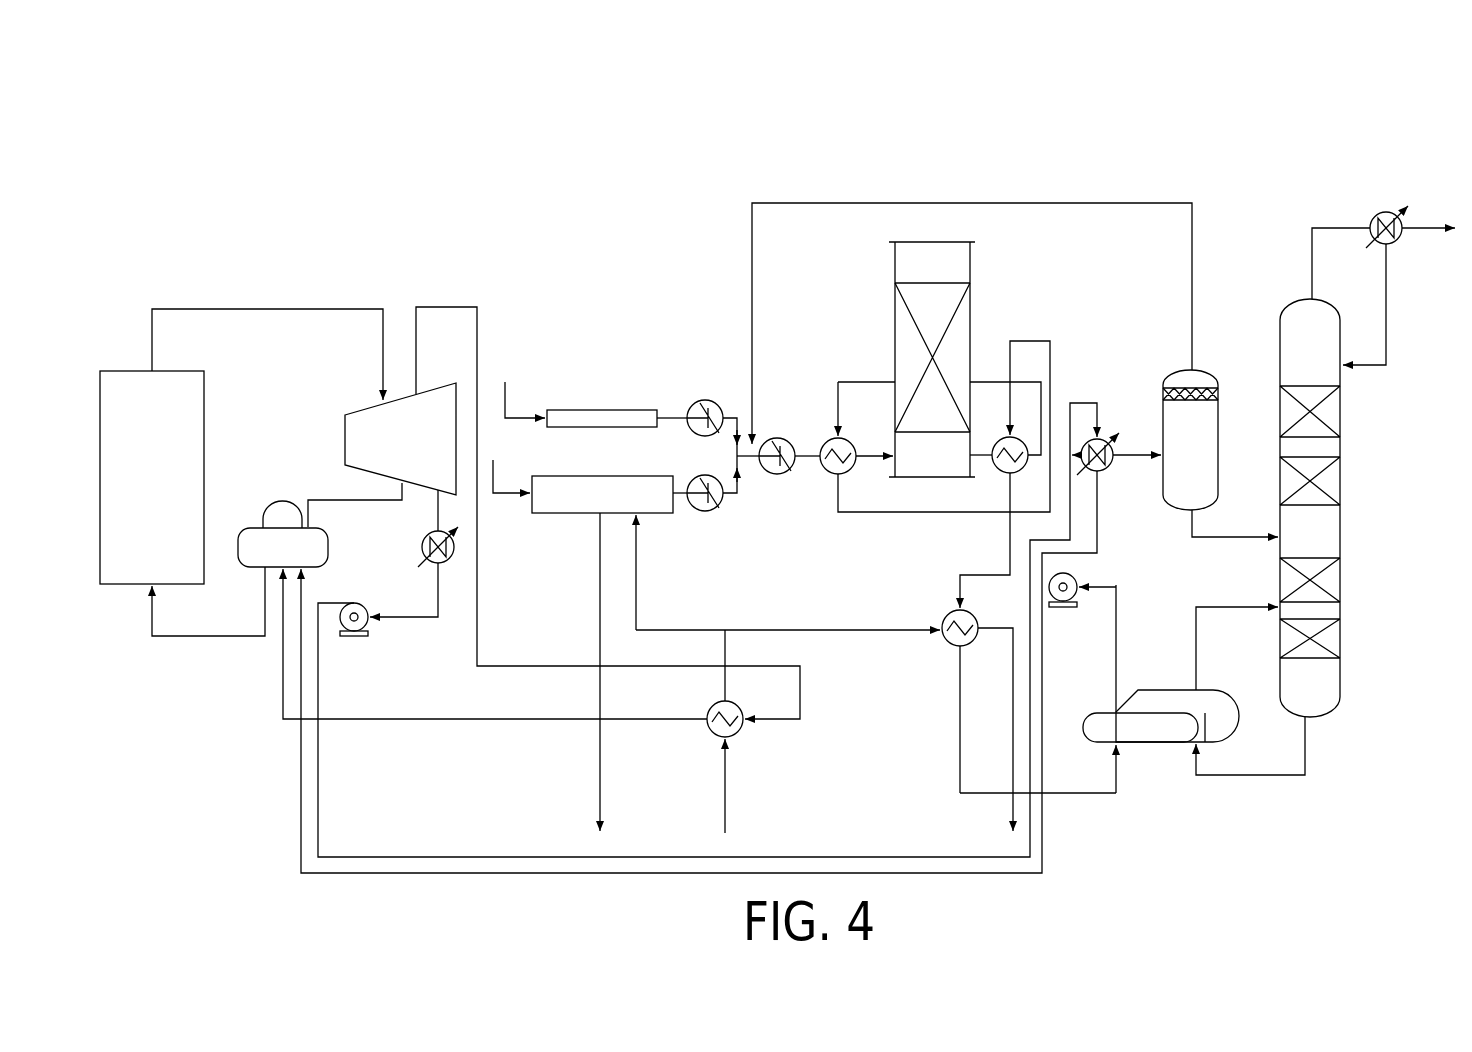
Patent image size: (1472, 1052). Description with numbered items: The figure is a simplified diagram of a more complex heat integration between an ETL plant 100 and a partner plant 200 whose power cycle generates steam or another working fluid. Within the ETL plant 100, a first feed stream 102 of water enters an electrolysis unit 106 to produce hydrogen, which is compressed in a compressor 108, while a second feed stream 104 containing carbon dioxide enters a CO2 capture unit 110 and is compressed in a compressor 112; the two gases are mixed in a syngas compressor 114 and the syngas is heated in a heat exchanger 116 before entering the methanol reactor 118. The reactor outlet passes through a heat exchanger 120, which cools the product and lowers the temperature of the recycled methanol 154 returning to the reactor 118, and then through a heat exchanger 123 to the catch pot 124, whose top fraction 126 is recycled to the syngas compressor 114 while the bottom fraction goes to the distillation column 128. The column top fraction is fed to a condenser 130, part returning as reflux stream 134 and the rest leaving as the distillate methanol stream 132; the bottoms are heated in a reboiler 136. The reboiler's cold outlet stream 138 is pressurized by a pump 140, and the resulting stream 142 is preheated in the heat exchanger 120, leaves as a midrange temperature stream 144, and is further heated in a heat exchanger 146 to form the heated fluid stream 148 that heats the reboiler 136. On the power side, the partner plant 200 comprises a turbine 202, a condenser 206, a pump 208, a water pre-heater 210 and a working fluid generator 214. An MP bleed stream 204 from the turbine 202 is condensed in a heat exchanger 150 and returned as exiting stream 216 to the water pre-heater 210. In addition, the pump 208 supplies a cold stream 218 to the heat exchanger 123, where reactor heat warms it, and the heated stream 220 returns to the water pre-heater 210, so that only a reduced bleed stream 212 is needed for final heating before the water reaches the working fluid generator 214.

The ETL plant 100 is at (980, 163).
The first feed stream 102 is at (515, 415).
The second feed stream 104 is at (500, 491).
The electrolysis unit 106 is at (590, 410).
The compressor 108 is at (705, 400).
The CO2 capture unit 110 is at (575, 476).
The compressor 112 is at (690, 482).
The syngas compressor 114 is at (777, 475).
The heat exchanger 116 is at (825, 438).
The methanol reactor 118 is at (895, 327).
The heat exchanger 120 is at (997, 471).
The heat exchanger 123 is at (1105, 438).
The catch pot 124 is at (1218, 452).
The top fraction 126 is at (1192, 265).
The distillation column 128 is at (1342, 528).
The condenser 130 is at (1373, 216).
The distillate methanol stream 132 is at (1440, 226).
The reflux stream 134 is at (1387, 334).
The reboiler 136 is at (1160, 743).
The cold outlet stream 138 is at (1117, 640).
The pump 140 is at (1080, 573).
The stream 142 is at (1050, 355).
The midrange temperature stream 144 is at (980, 573).
The heat exchanger 146 is at (945, 616).
The heated fluid stream 148 is at (1090, 795).
The heat exchanger 150 is at (736, 736).
The recycled methanol 154 is at (992, 380).
The partner plant 200 is at (288, 233).
The turbine 202 is at (345, 403).
The MP bleed stream 204 is at (440, 307).
The condenser 206 is at (422, 546).
The pump 208 is at (362, 634).
The water pre-heater 210 is at (258, 527).
The bleed stream 212 is at (316, 498).
The working fluid generator 214 is at (127, 370).
The exiting stream 216 is at (373, 722).
The cold stream 218 is at (458, 856).
The heated stream 220 is at (428, 874).